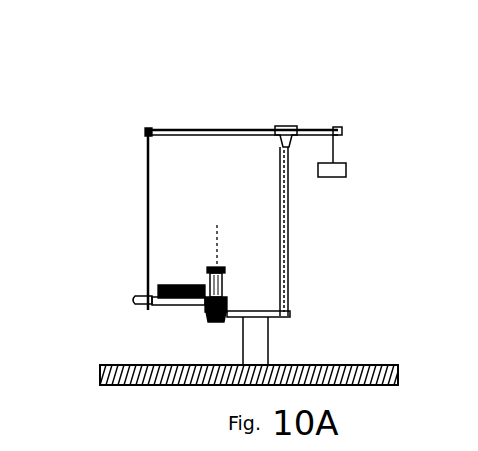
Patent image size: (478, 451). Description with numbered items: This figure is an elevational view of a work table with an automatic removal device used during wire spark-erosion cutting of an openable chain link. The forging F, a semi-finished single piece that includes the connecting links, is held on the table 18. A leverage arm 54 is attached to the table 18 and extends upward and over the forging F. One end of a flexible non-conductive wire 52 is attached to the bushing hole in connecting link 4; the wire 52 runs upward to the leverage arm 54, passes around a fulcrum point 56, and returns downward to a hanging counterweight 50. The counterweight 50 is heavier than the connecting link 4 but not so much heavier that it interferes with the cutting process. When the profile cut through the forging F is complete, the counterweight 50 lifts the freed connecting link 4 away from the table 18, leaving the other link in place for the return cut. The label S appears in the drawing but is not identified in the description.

The flexible non-conductive wire 52 is at (148, 167).
The leverage arm 54 is at (288, 163).
The fulcrum point 56 is at (340, 128).
The counterweight 50 is at (347, 161).
The connecting link 4 is at (143, 298).
The solenoid valve S is at (198, 285).
The forging F is at (167, 303).
The table 18 is at (263, 337).